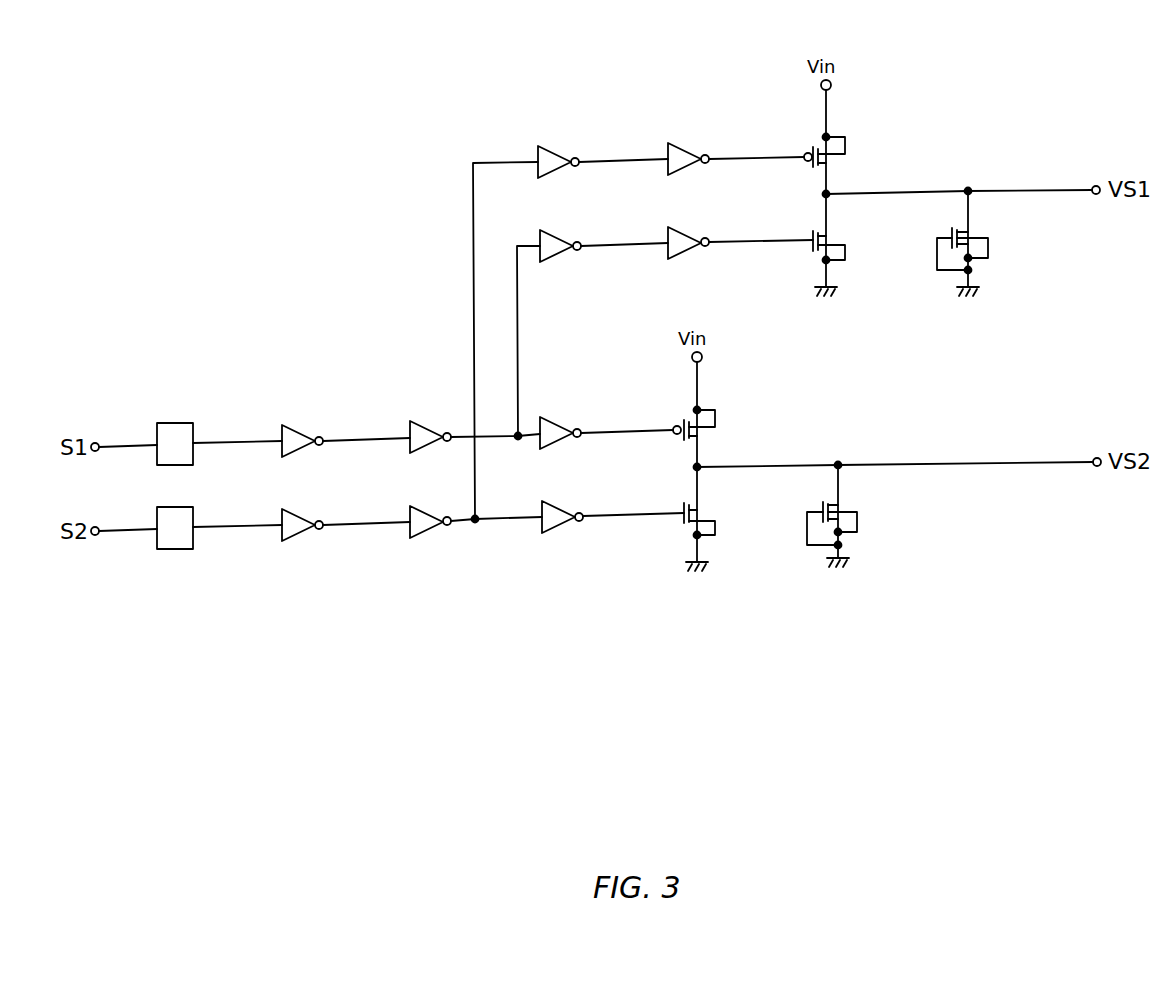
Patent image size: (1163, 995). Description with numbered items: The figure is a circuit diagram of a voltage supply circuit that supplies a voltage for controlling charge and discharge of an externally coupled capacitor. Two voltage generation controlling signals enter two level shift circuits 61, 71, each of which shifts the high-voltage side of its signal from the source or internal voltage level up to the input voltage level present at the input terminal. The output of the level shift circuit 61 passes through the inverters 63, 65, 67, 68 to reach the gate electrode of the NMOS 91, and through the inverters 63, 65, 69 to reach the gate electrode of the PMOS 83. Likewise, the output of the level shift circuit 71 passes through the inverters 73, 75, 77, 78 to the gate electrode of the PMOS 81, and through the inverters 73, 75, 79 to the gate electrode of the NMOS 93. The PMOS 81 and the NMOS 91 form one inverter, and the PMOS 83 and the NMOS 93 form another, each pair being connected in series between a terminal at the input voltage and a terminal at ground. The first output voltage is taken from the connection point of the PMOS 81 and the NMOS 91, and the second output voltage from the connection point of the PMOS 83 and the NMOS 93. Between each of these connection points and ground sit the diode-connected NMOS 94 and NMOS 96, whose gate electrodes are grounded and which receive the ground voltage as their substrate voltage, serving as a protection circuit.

The level shift circuit 61 is at (175, 422).
The inverter 63 is at (298, 424).
The inverter 65 is at (427, 422).
The inverter 67 is at (557, 262).
The inverter 68 is at (683, 258).
The inverter 69 is at (557, 419).
The level shift circuit 71 is at (173, 550).
The inverter 73 is at (297, 541).
The inverter 75 is at (425, 538).
The inverter 77 is at (557, 147).
The inverter 78 is at (683, 143).
The inverter 79 is at (555, 533).
The PMOS 81 is at (810, 150).
The PMOS 83 is at (683, 420).
The NMOS 91 is at (812, 232).
The NMOS 93 is at (685, 502).
The NMOS 94 is at (953, 224).
The NMOS 96 is at (825, 502).